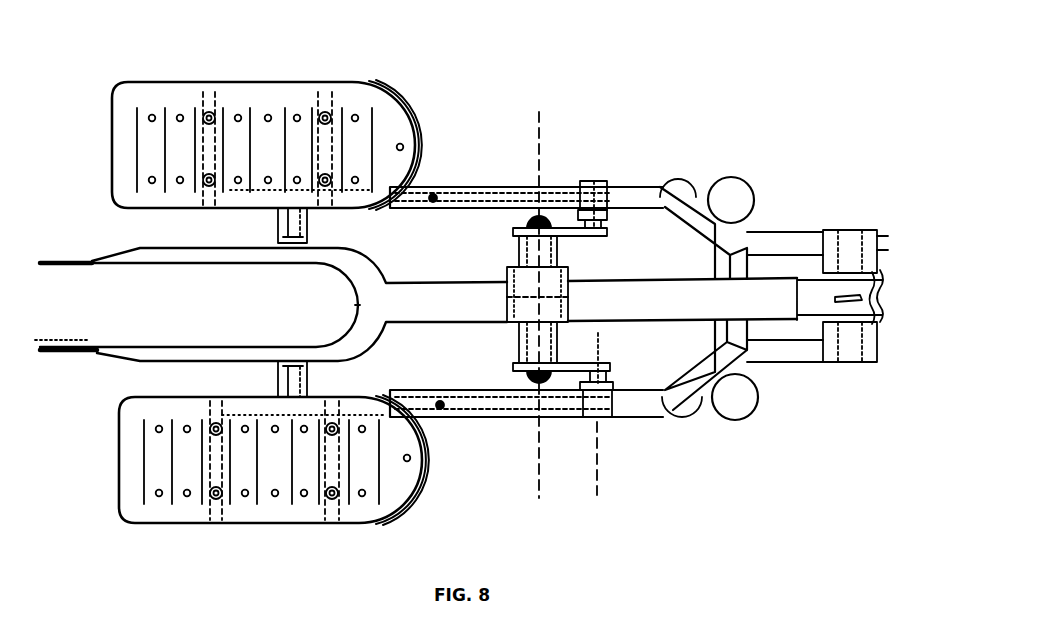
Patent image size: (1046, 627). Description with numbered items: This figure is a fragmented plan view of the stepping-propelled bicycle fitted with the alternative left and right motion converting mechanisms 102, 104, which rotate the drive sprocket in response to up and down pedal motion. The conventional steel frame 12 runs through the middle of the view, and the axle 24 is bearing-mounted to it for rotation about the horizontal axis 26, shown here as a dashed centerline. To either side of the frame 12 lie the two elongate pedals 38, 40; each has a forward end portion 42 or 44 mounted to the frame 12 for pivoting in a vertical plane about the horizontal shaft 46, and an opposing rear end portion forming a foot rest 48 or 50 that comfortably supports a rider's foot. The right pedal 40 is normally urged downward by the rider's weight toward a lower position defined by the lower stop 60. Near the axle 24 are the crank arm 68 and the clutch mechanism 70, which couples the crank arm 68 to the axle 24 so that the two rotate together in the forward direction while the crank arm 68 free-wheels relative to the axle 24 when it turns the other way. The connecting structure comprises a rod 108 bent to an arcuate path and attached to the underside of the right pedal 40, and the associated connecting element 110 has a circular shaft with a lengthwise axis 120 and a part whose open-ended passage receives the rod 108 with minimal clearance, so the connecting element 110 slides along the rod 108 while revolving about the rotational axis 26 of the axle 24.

The frame 12 is at (125, 241).
The axle 24 is at (510, 330).
The horizontal axis 26 is at (541, 137).
The left pedal 38 is at (131, 74).
The right pedal 40 is at (124, 537).
The forward end portion 42 is at (753, 233).
The forward end portion 44 is at (757, 367).
The horizontal shaft 46 is at (823, 237).
The foot rest 48 is at (112, 145).
The foot rest 50 is at (118, 462).
The lower stop 60 is at (285, 365).
The crank arm 68 is at (592, 366).
The clutch mechanism 70 is at (517, 350).
The left motion converting mechanism 102 is at (497, 165).
The right motion converting mechanism 104 is at (505, 439).
The rod 108 is at (470, 400).
The connecting element 110 is at (612, 393).
The lengthwise axis 120 is at (597, 495).